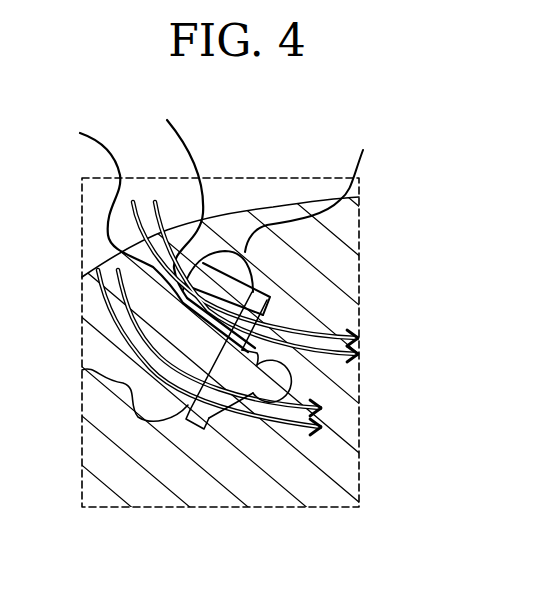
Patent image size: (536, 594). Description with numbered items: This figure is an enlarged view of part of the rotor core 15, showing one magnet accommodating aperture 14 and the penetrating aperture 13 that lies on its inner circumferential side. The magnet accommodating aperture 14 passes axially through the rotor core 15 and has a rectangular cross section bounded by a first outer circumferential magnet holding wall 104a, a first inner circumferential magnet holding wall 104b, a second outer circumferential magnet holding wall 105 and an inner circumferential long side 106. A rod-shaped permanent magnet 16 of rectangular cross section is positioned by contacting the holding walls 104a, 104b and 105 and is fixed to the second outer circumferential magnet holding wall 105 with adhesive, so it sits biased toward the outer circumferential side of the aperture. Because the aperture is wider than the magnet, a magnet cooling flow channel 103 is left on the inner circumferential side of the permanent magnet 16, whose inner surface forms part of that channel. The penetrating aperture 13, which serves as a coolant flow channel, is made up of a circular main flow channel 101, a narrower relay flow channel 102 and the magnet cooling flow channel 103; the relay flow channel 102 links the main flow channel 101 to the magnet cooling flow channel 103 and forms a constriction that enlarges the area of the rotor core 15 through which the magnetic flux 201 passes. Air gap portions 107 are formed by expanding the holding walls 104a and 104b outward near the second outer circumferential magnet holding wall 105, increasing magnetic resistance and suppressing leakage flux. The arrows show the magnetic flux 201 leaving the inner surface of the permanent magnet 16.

The penetrating aperture 13 is at (230, 435).
The magnet accommodating aperture 14 is at (318, 192).
The rotor core 15 is at (153, 232).
The permanent magnet 16 is at (200, 222).
The main flow channel 101 is at (272, 388).
The relay flow channel 102 is at (229, 368).
The magnet cooling flow channel 103 is at (188, 428).
The first outer circumferential magnet holding wall 104a is at (250, 288).
The first inner circumferential magnet holding wall 104b is at (188, 422).
The second outer circumferential magnet holding wall 105 is at (82, 370).
The inner circumferential long side 106 is at (263, 318).
The air gap portion 107 is at (232, 252).
The magnetic flux 201 is at (372, 372).